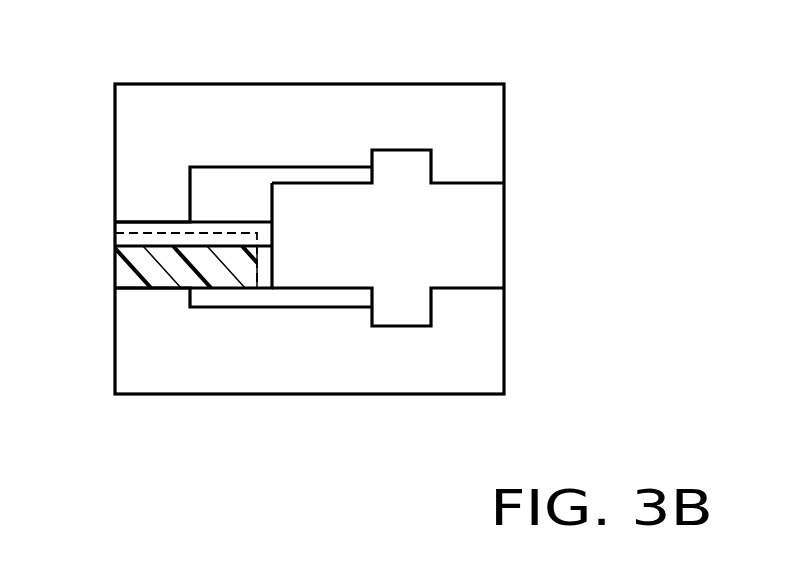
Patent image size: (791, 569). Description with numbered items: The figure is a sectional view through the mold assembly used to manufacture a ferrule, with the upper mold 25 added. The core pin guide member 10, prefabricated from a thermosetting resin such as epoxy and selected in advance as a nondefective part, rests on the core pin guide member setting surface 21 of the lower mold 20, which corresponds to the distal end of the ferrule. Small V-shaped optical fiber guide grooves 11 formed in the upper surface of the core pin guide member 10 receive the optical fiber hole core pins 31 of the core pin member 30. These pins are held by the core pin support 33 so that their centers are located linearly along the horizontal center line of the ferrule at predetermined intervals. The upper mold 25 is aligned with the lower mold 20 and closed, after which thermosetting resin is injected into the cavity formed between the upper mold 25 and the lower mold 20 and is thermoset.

The core pin guide member 10 is at (161, 282).
The optical fiber guide grooves 11 is at (140, 238).
The lower mold 20 is at (490, 342).
The core pin guide member setting surface 21 is at (132, 285).
The upper mold 25 is at (497, 119).
The core pin member 30 is at (537, 199).
The optical fiber hole core pins 31 is at (248, 222).
The core pin support 33 is at (493, 254).